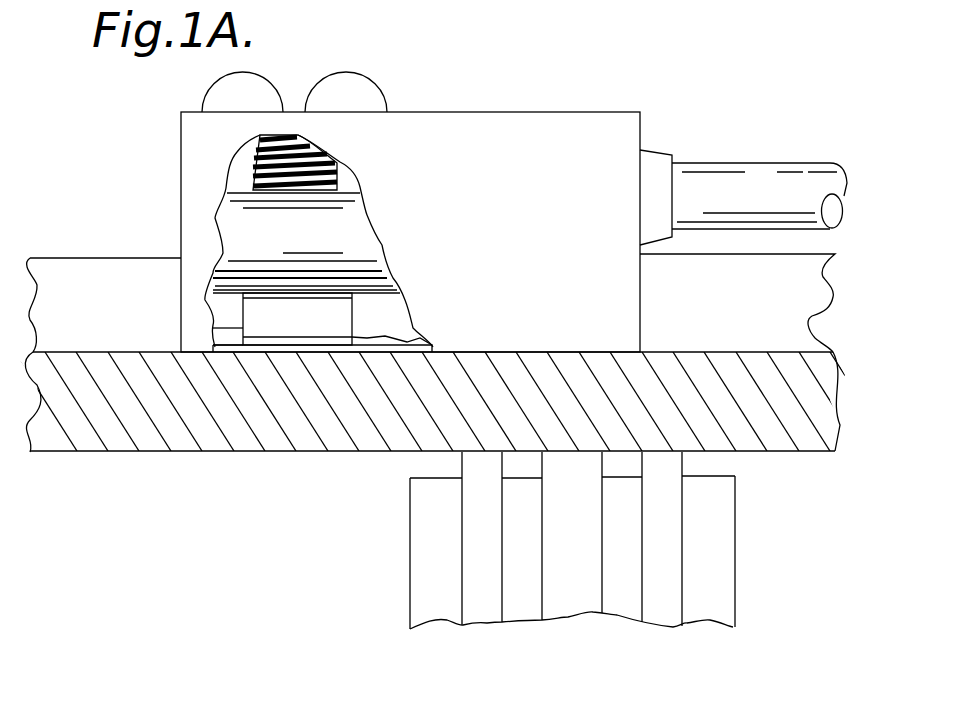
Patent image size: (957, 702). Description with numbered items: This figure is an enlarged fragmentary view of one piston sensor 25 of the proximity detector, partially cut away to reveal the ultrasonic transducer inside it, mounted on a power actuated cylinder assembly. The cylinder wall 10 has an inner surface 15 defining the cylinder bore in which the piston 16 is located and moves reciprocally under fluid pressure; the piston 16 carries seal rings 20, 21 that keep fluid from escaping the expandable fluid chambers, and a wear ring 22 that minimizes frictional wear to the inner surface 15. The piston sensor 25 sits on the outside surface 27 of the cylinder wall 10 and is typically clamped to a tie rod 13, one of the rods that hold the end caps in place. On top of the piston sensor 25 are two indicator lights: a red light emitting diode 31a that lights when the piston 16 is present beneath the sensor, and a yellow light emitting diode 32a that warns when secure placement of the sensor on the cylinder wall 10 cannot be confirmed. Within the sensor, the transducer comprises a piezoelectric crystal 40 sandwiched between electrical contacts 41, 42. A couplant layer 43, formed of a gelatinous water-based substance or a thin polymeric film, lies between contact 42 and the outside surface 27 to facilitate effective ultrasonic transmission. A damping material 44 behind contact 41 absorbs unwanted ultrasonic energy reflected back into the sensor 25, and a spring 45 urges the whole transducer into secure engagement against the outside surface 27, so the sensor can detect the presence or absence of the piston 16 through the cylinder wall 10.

The cylinder wall 10 is at (719, 336).
The tie rod 13 is at (137, 268).
The inner surface 15 is at (150, 453).
The piston 16 is at (408, 530).
The seal ring 20 is at (485, 608).
The seal ring 21 is at (670, 556).
The wear ring 22 is at (580, 598).
The piston sensor 25 is at (529, 98).
The outside surface 27 is at (63, 352).
The light emitting diode 31a is at (360, 84).
The light emitting diode 32a is at (222, 86).
The piezoelectric crystal 40 is at (333, 317).
The electrical contact 41 is at (320, 295).
The electrical contact 42 is at (277, 342).
The couplant layer 43 is at (375, 347).
The damping material 44 is at (352, 222).
The spring 45 is at (336, 177).